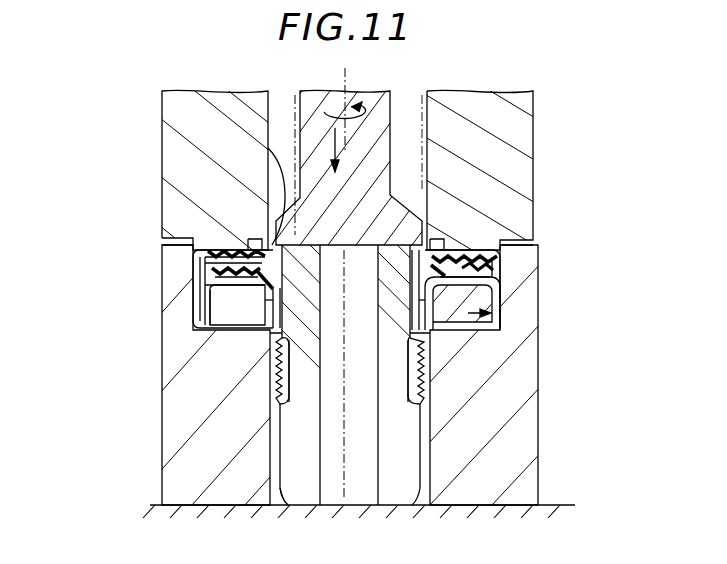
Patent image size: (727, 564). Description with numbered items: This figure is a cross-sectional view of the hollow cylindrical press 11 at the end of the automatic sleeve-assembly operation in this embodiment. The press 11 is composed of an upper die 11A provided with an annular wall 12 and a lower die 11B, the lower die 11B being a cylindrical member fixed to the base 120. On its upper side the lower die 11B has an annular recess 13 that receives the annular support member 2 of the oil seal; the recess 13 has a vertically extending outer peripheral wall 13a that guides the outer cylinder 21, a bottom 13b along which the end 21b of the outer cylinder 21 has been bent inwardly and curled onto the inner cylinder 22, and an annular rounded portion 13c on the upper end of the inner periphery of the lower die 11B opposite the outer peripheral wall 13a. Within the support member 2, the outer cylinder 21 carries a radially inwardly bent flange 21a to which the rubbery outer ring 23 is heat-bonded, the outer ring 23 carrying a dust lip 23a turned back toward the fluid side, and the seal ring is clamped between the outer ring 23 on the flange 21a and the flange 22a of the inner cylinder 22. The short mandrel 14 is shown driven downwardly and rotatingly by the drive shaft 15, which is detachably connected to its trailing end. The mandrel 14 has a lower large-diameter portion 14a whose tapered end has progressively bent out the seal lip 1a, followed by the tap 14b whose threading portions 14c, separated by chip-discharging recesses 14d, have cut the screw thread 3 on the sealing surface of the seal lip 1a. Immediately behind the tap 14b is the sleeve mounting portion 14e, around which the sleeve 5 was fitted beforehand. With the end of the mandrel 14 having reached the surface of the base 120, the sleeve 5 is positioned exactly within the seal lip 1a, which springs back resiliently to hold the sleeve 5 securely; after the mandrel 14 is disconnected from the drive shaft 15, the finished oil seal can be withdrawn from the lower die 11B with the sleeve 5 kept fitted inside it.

The hollow cylindrical press 11 is at (363, 282).
The upper die 11A is at (536, 142).
The lower die 11B is at (532, 421).
The annular wall 12 is at (525, 202).
The annular recess 13 is at (503, 318).
The outer peripheral wall 13a is at (501, 300).
The bottom of the annular recess 13b is at (455, 300).
The annular rounded portion 13c is at (430, 330).
The mandrel 14 is at (389, 511).
The lower large-diameter portion 14a is at (275, 474).
The tap 14b is at (86, 378).
The threading portions 14c is at (277, 385).
The axially-extending recesses 14d is at (274, 352).
The sleeve mounting portion 14e is at (268, 150).
The drive shaft 15 is at (378, 137).
The base 120 is at (470, 505).
The seal lip 1a is at (265, 335).
The annular support member 2 is at (182, 276).
The screw thread 3 is at (205, 290).
The sleeve 5 is at (252, 240).
The outer cylinder 21 is at (225, 292).
The flange 21a is at (255, 262).
The end of the outer cylinder 21b is at (240, 328).
The inner cylinder 22 is at (235, 305).
The flange 22a is at (235, 268).
The outer ring 23 is at (232, 255).
The dust lip 23a is at (245, 252).